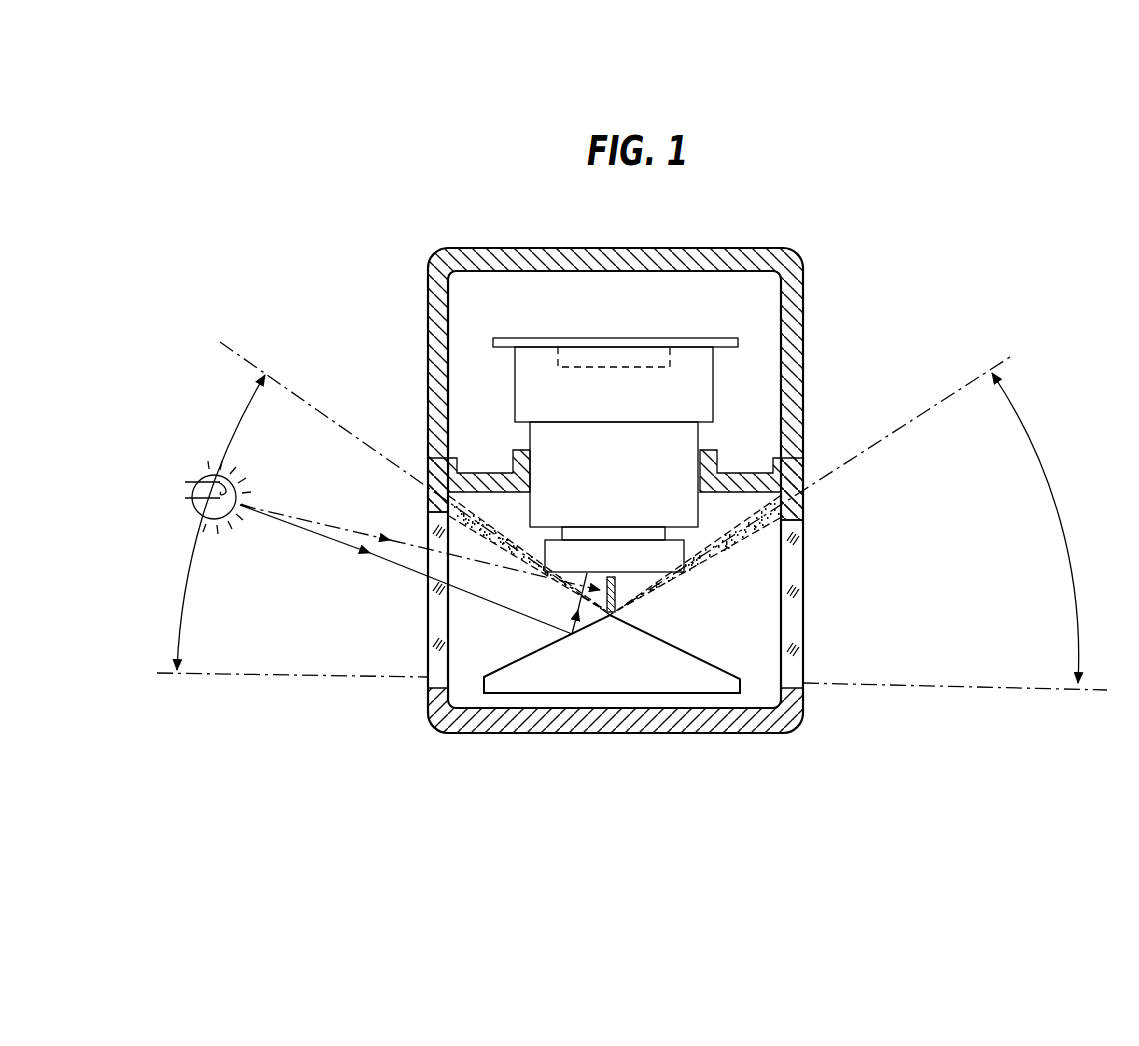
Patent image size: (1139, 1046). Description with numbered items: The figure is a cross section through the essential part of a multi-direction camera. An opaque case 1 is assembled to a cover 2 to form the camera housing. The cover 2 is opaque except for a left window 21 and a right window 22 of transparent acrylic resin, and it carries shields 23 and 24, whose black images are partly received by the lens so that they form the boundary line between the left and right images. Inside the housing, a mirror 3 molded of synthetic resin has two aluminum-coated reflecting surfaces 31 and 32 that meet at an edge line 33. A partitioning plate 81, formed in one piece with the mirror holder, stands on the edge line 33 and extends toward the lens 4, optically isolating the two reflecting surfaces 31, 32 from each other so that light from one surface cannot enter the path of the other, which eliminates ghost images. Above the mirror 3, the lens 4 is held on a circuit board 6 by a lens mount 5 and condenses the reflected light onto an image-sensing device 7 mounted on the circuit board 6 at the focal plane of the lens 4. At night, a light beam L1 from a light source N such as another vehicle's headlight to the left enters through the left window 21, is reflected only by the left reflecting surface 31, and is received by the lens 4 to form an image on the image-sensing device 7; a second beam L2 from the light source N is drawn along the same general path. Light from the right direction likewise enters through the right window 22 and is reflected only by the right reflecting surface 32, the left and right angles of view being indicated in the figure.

The case 1 is at (491, 243).
The cover 2 is at (483, 737).
The mirror 3 is at (616, 696).
The lens 4 is at (665, 558).
The lens mount 5 is at (690, 373).
The circuit board 6 is at (558, 337).
The image-sensing device 7 is at (614, 357).
The left window 21 is at (424, 640).
The right window 22 is at (803, 618).
The shield 23 is at (423, 467).
The shield 24 is at (803, 503).
The left reflecting surface 31 is at (513, 660).
The right reflecting surface 32 is at (710, 663).
The edge line 33 is at (610, 617).
The partitioning plate 81 is at (618, 592).
The light source N is at (193, 517).
The light beam L1 is at (337, 547).
The second light beam L2 is at (340, 527).